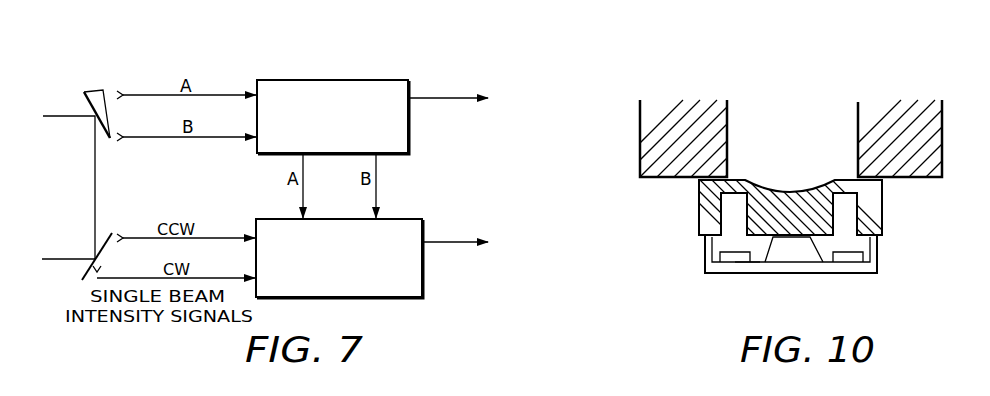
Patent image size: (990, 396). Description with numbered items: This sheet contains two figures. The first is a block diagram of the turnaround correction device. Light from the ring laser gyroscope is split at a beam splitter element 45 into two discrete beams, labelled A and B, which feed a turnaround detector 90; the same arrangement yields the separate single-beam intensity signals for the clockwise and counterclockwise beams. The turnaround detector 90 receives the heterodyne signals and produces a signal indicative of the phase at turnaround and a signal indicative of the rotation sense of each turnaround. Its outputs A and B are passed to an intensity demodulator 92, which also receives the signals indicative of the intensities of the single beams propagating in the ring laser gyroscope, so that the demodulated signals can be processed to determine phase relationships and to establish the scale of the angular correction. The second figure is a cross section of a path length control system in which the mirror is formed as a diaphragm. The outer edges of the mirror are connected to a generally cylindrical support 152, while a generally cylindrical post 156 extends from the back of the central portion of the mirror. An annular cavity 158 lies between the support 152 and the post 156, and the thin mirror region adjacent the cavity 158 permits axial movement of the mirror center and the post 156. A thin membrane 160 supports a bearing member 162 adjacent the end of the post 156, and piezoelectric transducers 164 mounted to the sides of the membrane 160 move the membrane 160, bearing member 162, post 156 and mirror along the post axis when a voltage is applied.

In FIG. 7, the beam splitter 45 is at (97, 90).
In FIG. 7, the turnaround detector 90 is at (352, 80).
In FIG. 7, the intensity demodulator 92 is at (413, 219).
In FIG. 10, the support 152 is at (640, 123).
In FIG. 10, the post 156 is at (838, 217).
In FIG. 10, the annular cavity 158 is at (732, 206).
In FIG. 10, the thin membrane 160 is at (855, 258).
In FIG. 10, the bearing member 162 is at (750, 258).
In FIG. 10, the piezoelectric transducers 164 is at (716, 257).